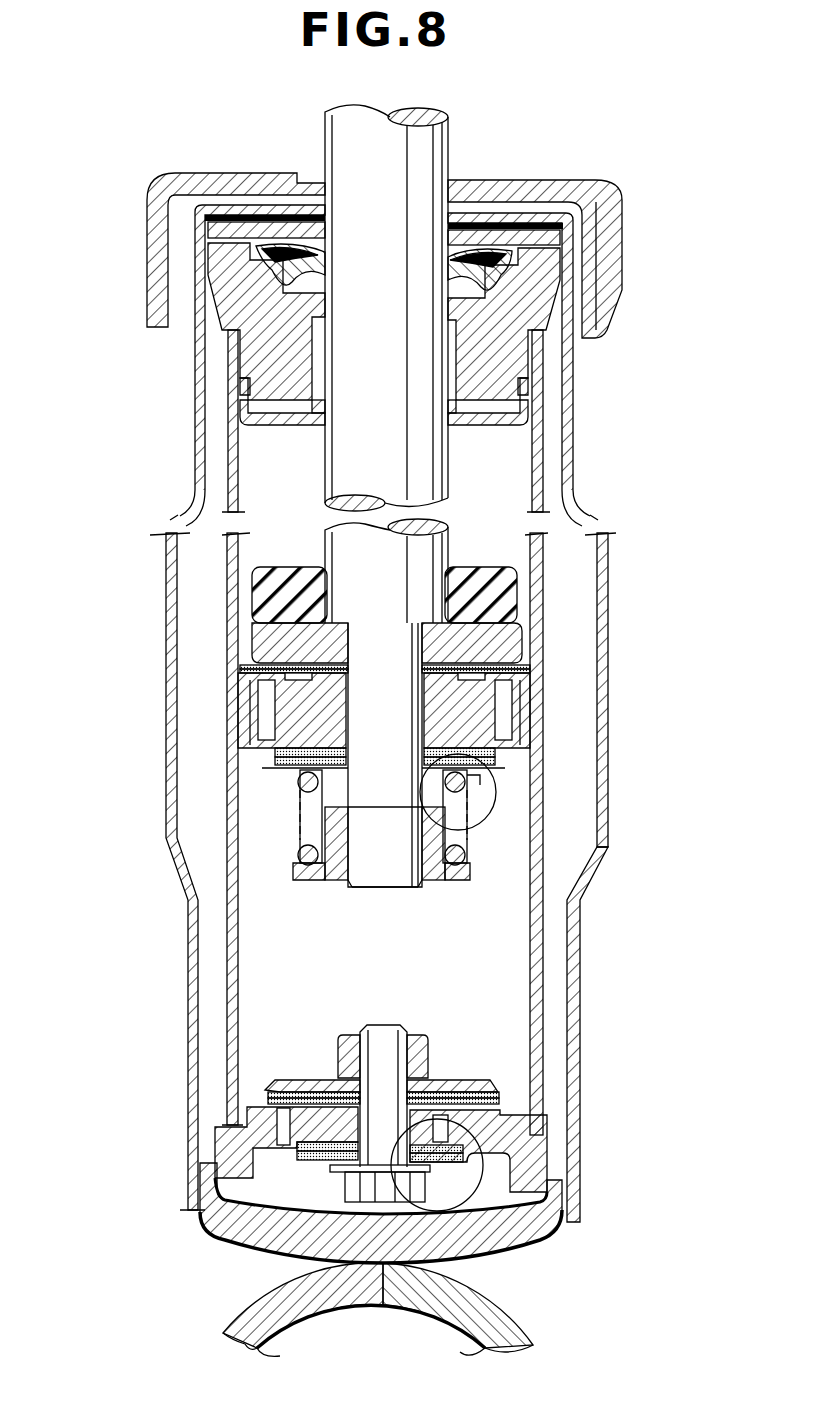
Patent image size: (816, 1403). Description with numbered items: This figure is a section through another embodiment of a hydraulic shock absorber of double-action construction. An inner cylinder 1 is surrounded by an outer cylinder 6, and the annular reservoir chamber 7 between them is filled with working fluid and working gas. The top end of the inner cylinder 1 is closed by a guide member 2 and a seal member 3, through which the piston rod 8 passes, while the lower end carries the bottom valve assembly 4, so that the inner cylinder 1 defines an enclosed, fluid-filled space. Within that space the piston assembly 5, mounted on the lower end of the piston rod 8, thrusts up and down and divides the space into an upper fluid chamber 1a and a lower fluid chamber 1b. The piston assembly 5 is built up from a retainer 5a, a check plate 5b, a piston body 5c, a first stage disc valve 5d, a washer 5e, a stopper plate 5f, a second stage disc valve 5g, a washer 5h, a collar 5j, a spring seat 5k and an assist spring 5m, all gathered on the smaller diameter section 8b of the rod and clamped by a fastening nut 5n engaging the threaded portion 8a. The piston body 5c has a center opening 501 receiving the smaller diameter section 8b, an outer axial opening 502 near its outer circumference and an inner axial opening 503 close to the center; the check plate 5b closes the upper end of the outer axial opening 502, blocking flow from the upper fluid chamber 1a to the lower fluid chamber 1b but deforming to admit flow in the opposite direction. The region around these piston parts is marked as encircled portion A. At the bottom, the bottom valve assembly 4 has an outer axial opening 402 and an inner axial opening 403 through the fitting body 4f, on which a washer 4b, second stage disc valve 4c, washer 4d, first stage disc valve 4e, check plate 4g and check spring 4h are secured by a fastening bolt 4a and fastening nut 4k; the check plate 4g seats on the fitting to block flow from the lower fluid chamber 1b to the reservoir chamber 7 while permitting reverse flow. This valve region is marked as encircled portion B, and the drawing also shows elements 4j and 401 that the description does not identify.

The inner cylinder 1 is at (218, 576).
The upper fluid chamber 1a is at (258, 514).
The lower fluid chamber 1b is at (258, 977).
The guide member 2 is at (230, 389).
The seal member 3 is at (485, 212).
The bottom valve assembly 4 is at (359, 1144).
The fastening bolt 4a is at (335, 1255).
The washer 4b is at (295, 1225).
The second stage disc valve 4c is at (237, 1162).
The washer 4d is at (215, 1218).
The first stage disc valve 4e is at (275, 1125).
The fitting body 4f is at (235, 1122).
The check plate 4g is at (270, 1093).
The check spring 4h is at (280, 1088).
The spring disc 4j is at (355, 1072).
The fastening nut 4k is at (422, 1060).
The bolt 401 is at (378, 1105).
The outer axial opening 402 is at (235, 1152).
The inner axial opening 403 is at (520, 1130).
The piston assembly 5 is at (369, 748).
The retainer 5a is at (247, 628).
The check plate 5b is at (245, 663).
The piston body 5c is at (242, 740).
The first stage disc valve 5d is at (283, 722).
The washer 5e is at (355, 762).
The stopper plate 5f is at (242, 752).
The second stage disc valve 5g is at (247, 758).
The washer 5h is at (322, 768).
The collar 5j is at (340, 812).
The spring seat 5k is at (280, 776).
The assist spring 5m is at (505, 800).
The fastening nut 5n is at (460, 880).
The center opening 501 is at (355, 708).
The outer axial opening 502 is at (265, 707).
The inner axial opening 503 is at (525, 695).
The outer cylinder 6 is at (158, 540).
The annular reservoir chamber 7 is at (578, 880).
The piston rod 8 is at (318, 140).
The threaded portion 8a is at (428, 880).
The smaller diameter section 8b is at (378, 880).
The encircled portion A is at (545, 790).
The encircled portion B is at (545, 1165).